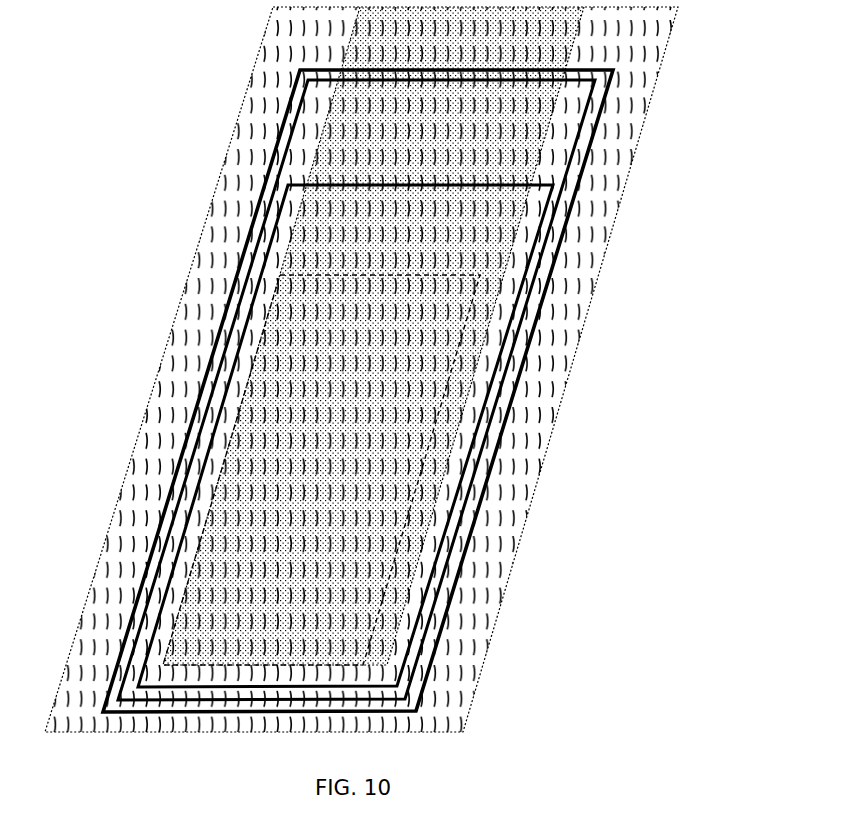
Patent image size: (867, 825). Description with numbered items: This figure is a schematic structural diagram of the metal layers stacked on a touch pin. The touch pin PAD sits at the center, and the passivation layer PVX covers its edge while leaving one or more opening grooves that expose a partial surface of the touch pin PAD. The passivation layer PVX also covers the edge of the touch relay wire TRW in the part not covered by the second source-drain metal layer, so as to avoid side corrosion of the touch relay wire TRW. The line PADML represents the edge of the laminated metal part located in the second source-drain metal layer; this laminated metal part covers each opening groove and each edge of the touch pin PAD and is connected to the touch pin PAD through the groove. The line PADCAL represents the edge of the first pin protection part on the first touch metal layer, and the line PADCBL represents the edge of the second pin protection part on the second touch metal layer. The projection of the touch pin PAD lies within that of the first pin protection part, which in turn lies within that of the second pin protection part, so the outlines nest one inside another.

The touch relay wire TRW is at (575, 42).
The passivation layer PVX is at (495, 542).
The edge of the first pin protection part PADCAL is at (580, 114).
The edge of the laminated metal part PADML is at (550, 170).
The edge of the second pin protection part PADCBL is at (562, 232).
The touch pin PAD is at (470, 350).